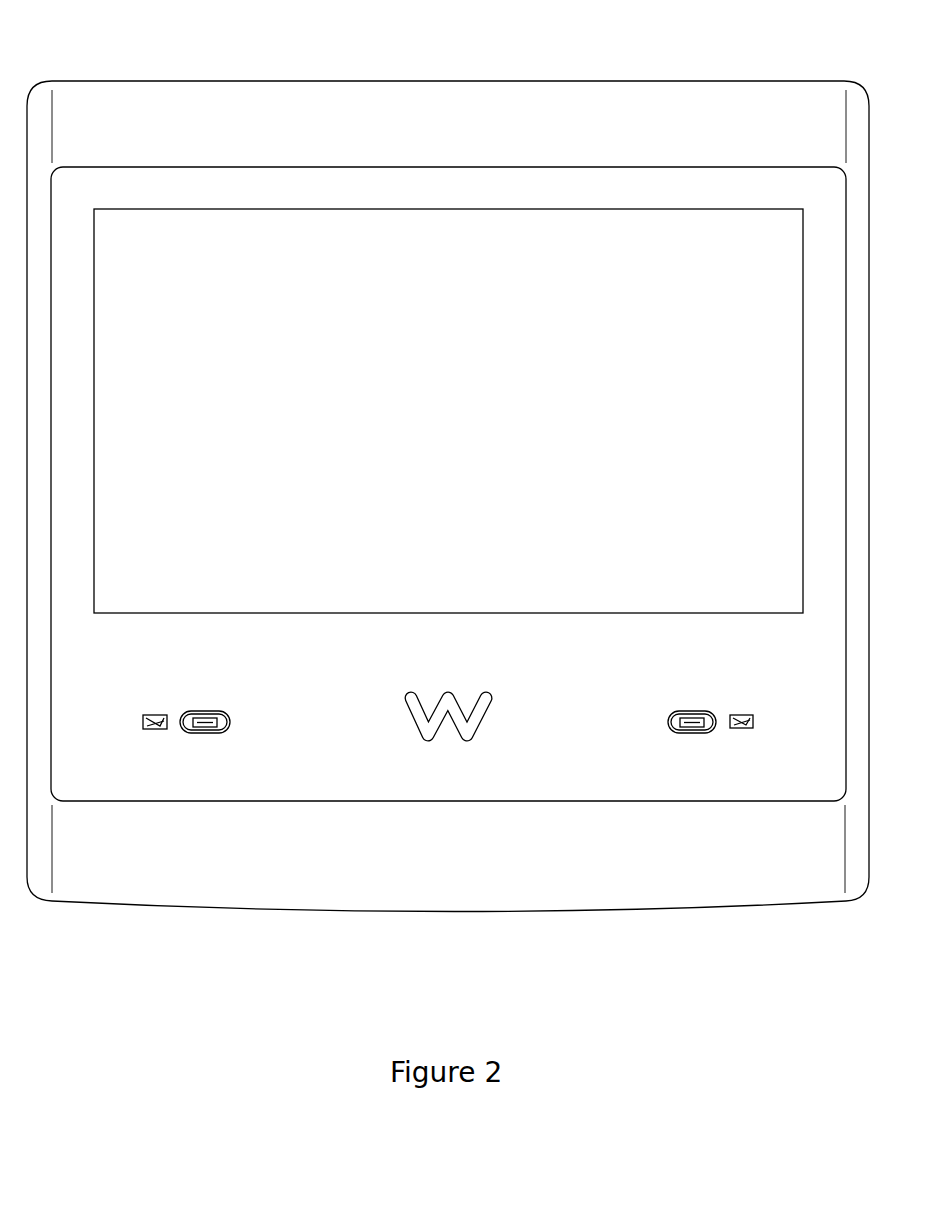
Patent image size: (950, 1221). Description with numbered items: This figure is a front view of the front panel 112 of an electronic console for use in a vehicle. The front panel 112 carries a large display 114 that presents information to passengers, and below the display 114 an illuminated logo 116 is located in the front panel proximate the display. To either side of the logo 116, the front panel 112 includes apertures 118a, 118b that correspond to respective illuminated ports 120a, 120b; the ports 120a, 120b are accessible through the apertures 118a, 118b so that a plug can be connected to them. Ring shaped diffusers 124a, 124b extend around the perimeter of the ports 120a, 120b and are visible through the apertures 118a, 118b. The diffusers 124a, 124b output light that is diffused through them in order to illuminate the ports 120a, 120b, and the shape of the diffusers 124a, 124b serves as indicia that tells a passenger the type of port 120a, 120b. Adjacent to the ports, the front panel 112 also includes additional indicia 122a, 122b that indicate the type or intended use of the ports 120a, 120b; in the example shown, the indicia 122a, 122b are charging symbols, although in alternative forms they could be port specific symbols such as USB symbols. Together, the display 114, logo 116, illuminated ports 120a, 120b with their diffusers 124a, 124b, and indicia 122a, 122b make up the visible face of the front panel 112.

The front panel 112 is at (346, 133).
The display 114 is at (630, 300).
The illuminated logo 116 is at (429, 727).
The aperture 118a is at (222, 733).
The aperture 118b is at (668, 733).
The illuminated port 120a is at (188, 712).
The illuminated port 120b is at (710, 714).
The indicia 122a is at (150, 729).
The indicia 122b is at (745, 728).
The ring shaped diffuser 124a is at (203, 733).
The ring shaped diffuser 124b is at (686, 733).